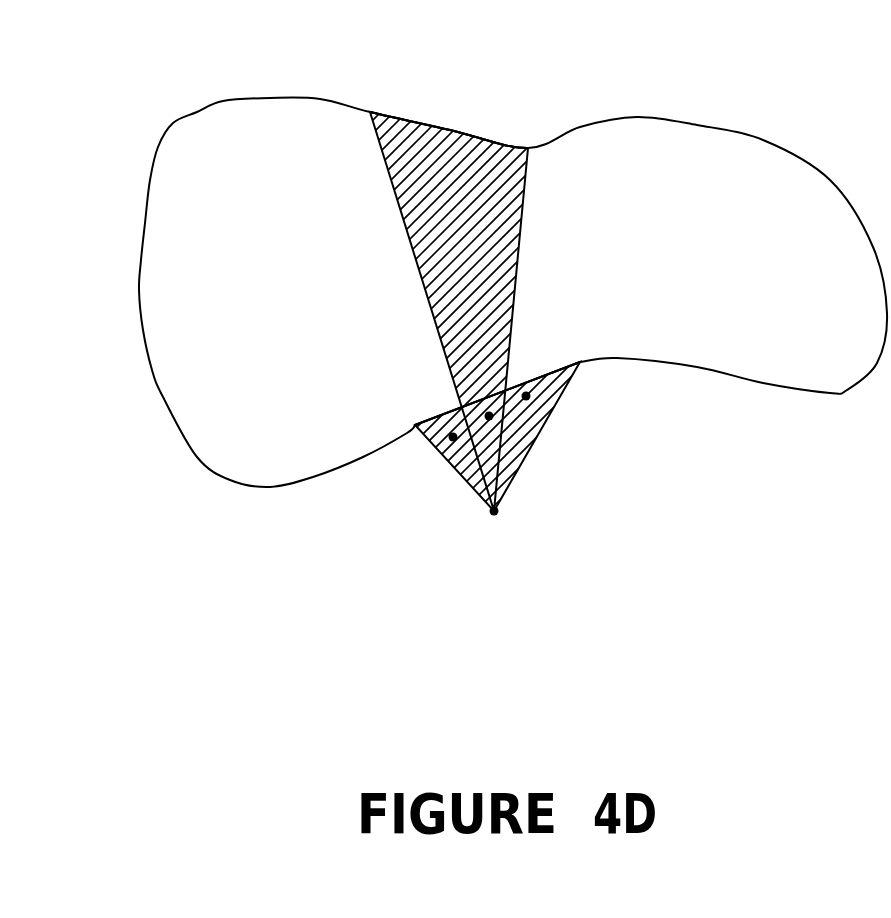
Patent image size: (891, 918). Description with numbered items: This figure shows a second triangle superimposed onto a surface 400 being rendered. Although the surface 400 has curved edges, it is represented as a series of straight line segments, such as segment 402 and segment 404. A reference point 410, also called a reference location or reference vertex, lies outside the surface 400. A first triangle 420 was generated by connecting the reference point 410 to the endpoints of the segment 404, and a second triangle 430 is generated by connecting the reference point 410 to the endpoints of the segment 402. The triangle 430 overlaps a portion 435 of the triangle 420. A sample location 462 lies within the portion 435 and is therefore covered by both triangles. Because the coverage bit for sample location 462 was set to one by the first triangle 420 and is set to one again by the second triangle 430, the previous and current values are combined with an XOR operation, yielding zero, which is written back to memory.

The surface 400 is at (697, 125).
The segment 402 is at (408, 120).
The segment 404 is at (427, 414).
The reference point 410 is at (498, 511).
The triangle 420 is at (437, 452).
The second triangle 430 is at (522, 217).
The portion 435 is at (455, 401).
The sample location 462 is at (490, 396).